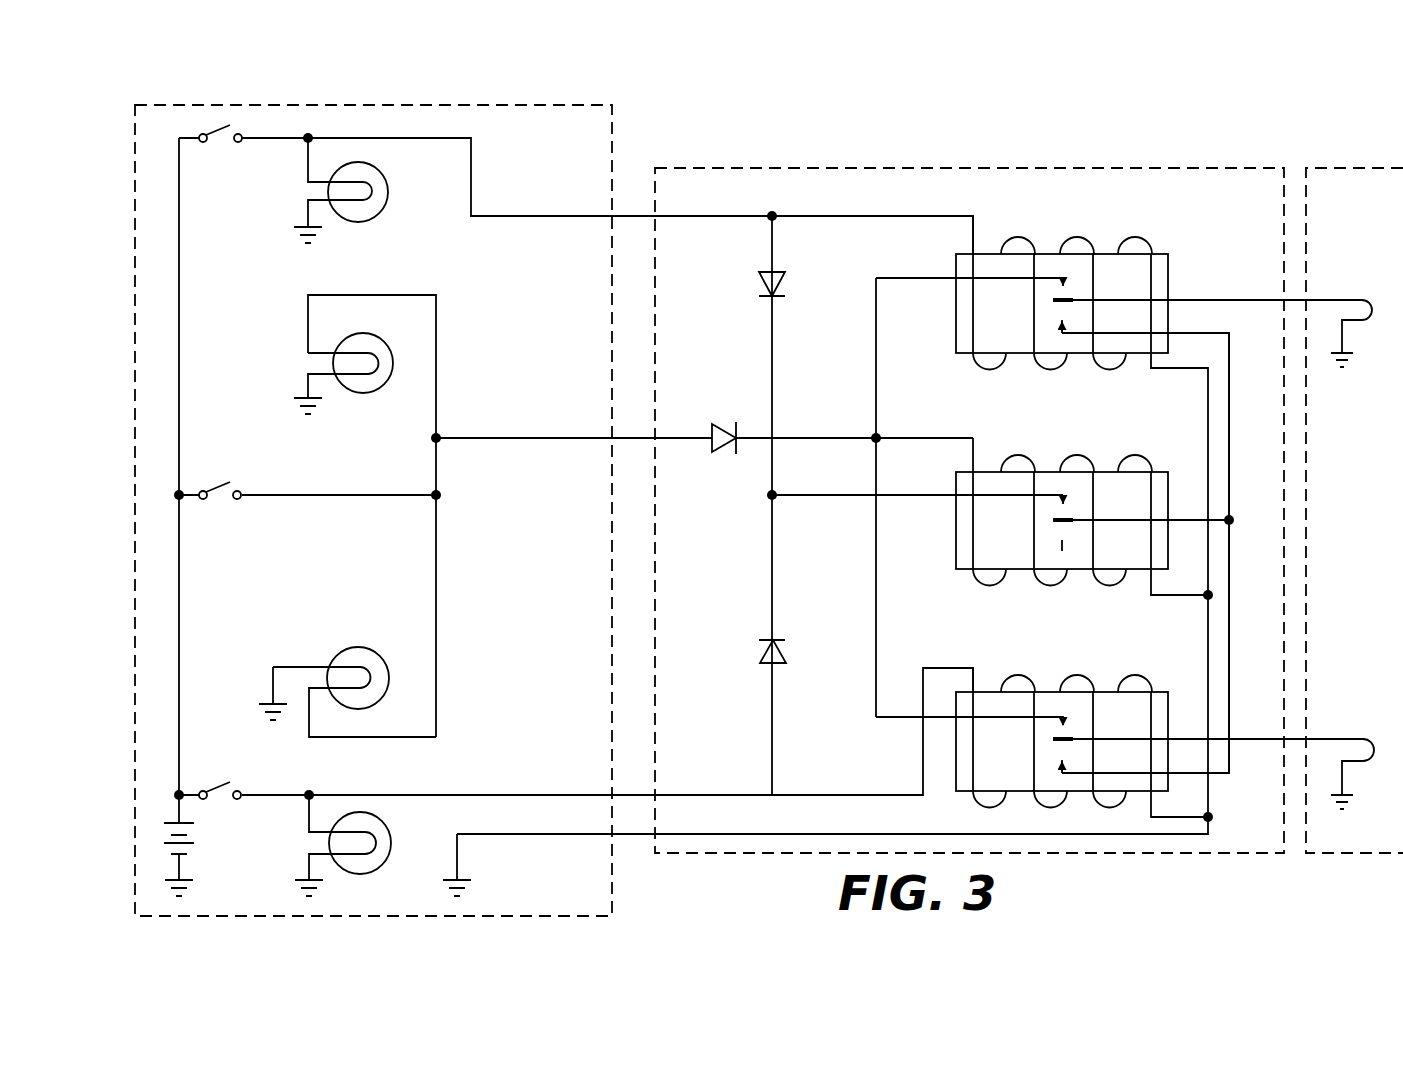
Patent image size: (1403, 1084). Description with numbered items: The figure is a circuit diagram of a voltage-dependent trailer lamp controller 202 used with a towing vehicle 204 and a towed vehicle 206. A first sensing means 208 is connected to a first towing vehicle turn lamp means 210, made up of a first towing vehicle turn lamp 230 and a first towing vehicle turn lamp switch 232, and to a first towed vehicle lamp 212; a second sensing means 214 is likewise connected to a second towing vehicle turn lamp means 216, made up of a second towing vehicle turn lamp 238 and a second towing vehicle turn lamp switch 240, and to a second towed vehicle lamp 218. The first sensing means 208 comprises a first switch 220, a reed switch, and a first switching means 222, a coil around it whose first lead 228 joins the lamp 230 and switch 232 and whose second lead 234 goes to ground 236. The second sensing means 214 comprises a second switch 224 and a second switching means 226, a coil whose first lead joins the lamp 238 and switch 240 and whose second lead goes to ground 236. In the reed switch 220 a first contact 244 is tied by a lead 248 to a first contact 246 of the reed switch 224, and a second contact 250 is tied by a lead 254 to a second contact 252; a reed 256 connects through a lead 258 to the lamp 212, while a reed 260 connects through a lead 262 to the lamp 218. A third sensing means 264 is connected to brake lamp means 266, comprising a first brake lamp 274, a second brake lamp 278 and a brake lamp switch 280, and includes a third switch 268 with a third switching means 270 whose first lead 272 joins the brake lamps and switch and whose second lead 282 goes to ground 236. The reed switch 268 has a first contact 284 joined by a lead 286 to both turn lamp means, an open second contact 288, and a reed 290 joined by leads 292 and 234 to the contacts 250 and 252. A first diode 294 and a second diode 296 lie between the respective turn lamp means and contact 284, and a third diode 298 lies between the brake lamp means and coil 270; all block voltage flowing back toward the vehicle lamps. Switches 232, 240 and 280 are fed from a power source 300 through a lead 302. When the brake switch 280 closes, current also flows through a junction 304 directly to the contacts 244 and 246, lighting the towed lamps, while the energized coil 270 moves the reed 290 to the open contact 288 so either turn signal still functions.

The trailer lamp controller 202 is at (788, 170).
The towing vehicle 204 is at (612, 143).
The towed vehicle 206 is at (1350, 166).
The first sensing means 208 is at (1119, 483).
The first towing vehicle turn lamp means 210 is at (299, 177).
The first towed vehicle lamp 212 is at (1385, 311).
The second sensing means 214 is at (1119, 730).
The second towing vehicle turn lamp means 216 is at (304, 825).
The second towed vehicle lamp 218 is at (1381, 738).
The first switch 220 is at (955, 262).
The first switching means 222 is at (1022, 240).
The second switch 224 is at (1172, 704).
The second switching means 226 is at (985, 810).
The first lead 228 is at (858, 216).
The first towing vehicle turn lamp 230 is at (386, 206).
The first towing vehicle turn lamp switch 232 is at (207, 129).
The second lead 234 is at (1207, 409).
The ground 236 is at (465, 879).
The second towing vehicle turn lamp 238 is at (382, 868).
The second towing vehicle turn lamp switch 240 is at (237, 770).
The first contact 244 is at (1073, 262).
The first contact 246 is at (1073, 701).
The lead 248 is at (875, 363).
The second contact 250 is at (1056, 325).
The second contact 252 is at (1058, 767).
The lead 254 is at (1231, 458).
The reed 256 is at (1102, 298).
The lead 258 is at (1210, 300).
The reed 260 is at (1141, 738).
The lead 262 is at (1272, 723).
The third sensing means 264 is at (1052, 553).
The brake lamp means 266 is at (307, 516).
The third switch 268 is at (955, 480).
The third switching means 270 is at (986, 588).
The first lead 272 is at (928, 438).
The first brake lamp 274 is at (388, 385).
The second brake lamp 278 is at (372, 650).
The brake lamp switch 280 is at (250, 468).
The second lead 282 is at (1150, 588).
The first contact 284 is at (1073, 480).
The lead 286 is at (838, 497).
The open second contact 288 is at (1060, 547).
The reed 290 is at (1141, 519).
The lead 292 is at (1187, 517).
The first diode 294 is at (758, 287).
The second diode 296 is at (762, 653).
The third diode 298 is at (727, 453).
The power source 300 is at (191, 827).
The lead 302 is at (179, 370).
The junction 304 is at (874, 436).